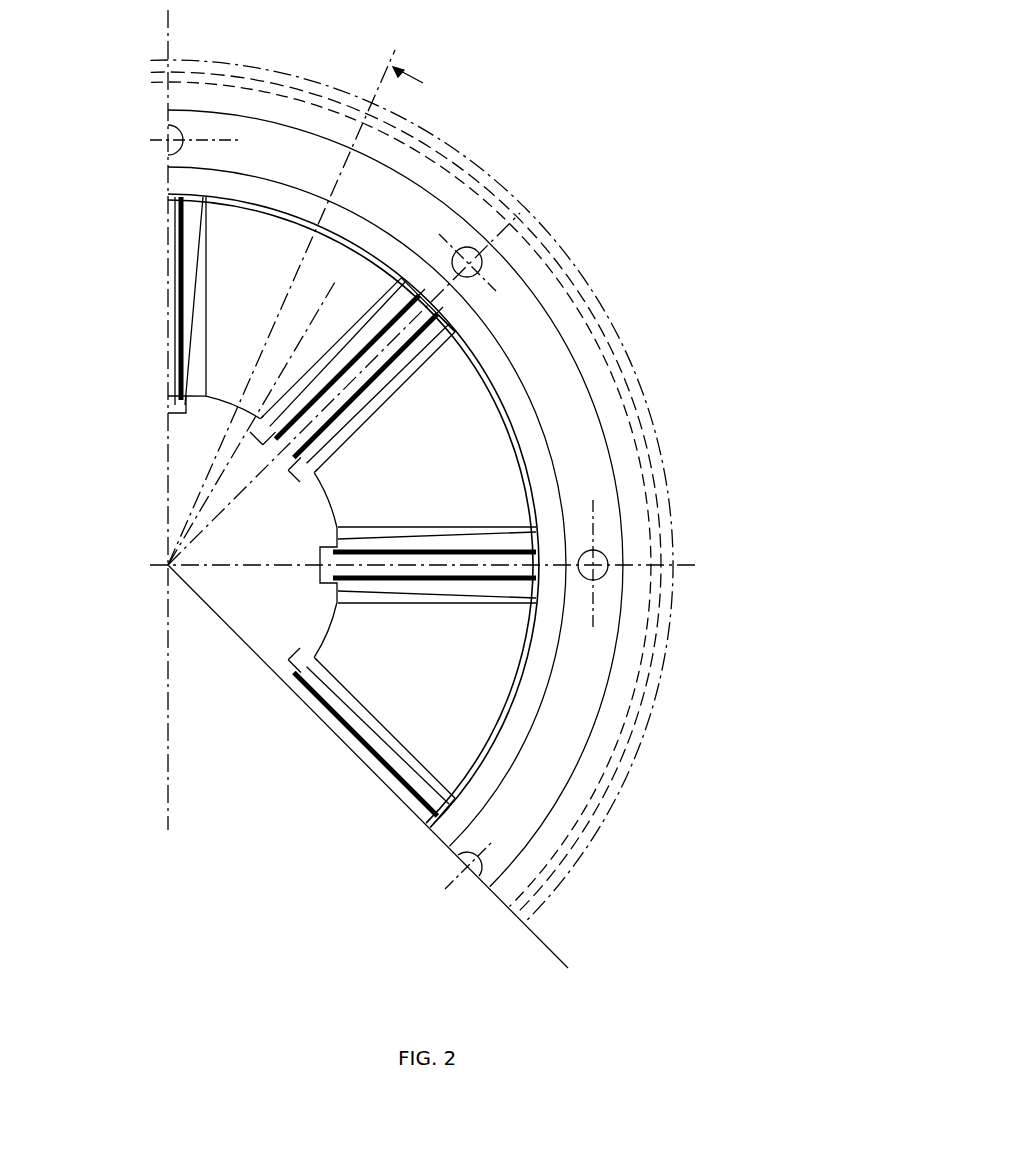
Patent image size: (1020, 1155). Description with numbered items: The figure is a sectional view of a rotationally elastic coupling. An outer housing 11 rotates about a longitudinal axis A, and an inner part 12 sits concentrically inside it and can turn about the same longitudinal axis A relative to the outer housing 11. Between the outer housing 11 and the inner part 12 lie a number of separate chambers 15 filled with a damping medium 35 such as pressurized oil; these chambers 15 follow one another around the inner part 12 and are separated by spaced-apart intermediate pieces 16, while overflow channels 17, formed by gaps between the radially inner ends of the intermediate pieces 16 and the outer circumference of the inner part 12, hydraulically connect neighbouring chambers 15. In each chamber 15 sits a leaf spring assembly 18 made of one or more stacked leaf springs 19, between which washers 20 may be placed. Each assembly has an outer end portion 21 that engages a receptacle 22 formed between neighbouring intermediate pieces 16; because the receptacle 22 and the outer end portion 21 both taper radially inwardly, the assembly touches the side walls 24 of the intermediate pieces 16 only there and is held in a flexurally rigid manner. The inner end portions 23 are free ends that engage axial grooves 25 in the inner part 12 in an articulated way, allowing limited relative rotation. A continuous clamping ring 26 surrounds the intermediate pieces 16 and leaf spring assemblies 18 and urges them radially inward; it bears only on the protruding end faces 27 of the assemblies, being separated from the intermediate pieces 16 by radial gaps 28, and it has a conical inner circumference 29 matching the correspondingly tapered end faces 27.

The outer housing 11 is at (292, 153).
The inner part 12 is at (205, 585).
The chambers 15 is at (262, 412).
The intermediate pieces 16 is at (242, 250).
The overflow channels 17 is at (236, 411).
The leaf spring assemblies 18 is at (185, 248).
The leaf springs 19 is at (183, 295).
The washers 20 is at (450, 294).
The outer end portion 21 is at (452, 335).
The receptacle 22 is at (436, 350).
The inner end portions 23 is at (268, 440).
The side walls 24 is at (305, 384).
The axial grooves 25 is at (283, 437).
The clamping ring 26 is at (345, 280).
The end faces 27 is at (437, 288).
The radial gaps 28 is at (345, 240).
The conical inner circumference 29 is at (415, 263).
The damping medium 35 is at (356, 597).
The longitudinal axis A is at (165, 565).